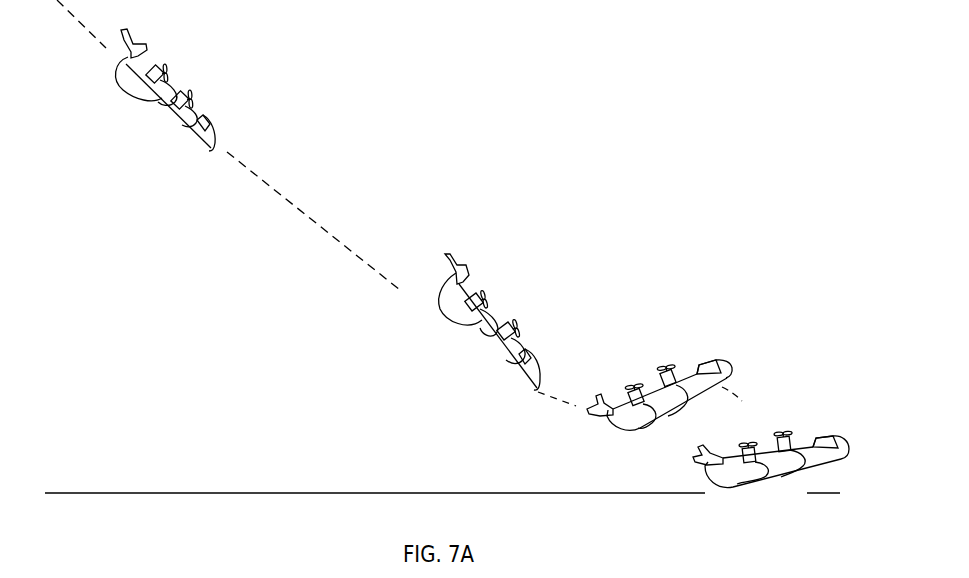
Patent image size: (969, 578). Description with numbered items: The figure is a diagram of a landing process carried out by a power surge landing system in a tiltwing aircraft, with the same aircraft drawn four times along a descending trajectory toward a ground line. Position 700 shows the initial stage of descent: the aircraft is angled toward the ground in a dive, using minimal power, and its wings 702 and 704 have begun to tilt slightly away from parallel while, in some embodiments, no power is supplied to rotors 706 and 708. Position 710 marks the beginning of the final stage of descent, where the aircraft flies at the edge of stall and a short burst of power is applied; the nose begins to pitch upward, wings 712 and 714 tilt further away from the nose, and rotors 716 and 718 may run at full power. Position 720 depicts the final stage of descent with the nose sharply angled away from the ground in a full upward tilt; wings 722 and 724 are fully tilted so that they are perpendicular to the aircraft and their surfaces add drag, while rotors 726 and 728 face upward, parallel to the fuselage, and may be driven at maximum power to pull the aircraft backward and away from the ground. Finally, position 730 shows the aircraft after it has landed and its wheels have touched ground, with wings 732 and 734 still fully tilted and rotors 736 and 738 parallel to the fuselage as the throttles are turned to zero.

The position 700 is at (179, 115).
The wing 702 is at (152, 99).
The wing 704 is at (175, 127).
The rotor 706 is at (166, 72).
The rotor 708 is at (191, 98).
The position 710 is at (505, 343).
The wing 712 is at (470, 328).
The wing 714 is at (500, 360).
The rotor 716 is at (486, 296).
The rotor 718 is at (517, 330).
The position 720 is at (643, 393).
The wing 722 is at (640, 428).
The wing 724 is at (682, 386).
The rotor 726 is at (629, 387).
The rotor 728 is at (663, 370).
The position 730 is at (771, 466).
The wing 732 is at (745, 481).
The wing 734 is at (783, 477).
The rotor 736 is at (748, 444).
The rotor 738 is at (783, 436).